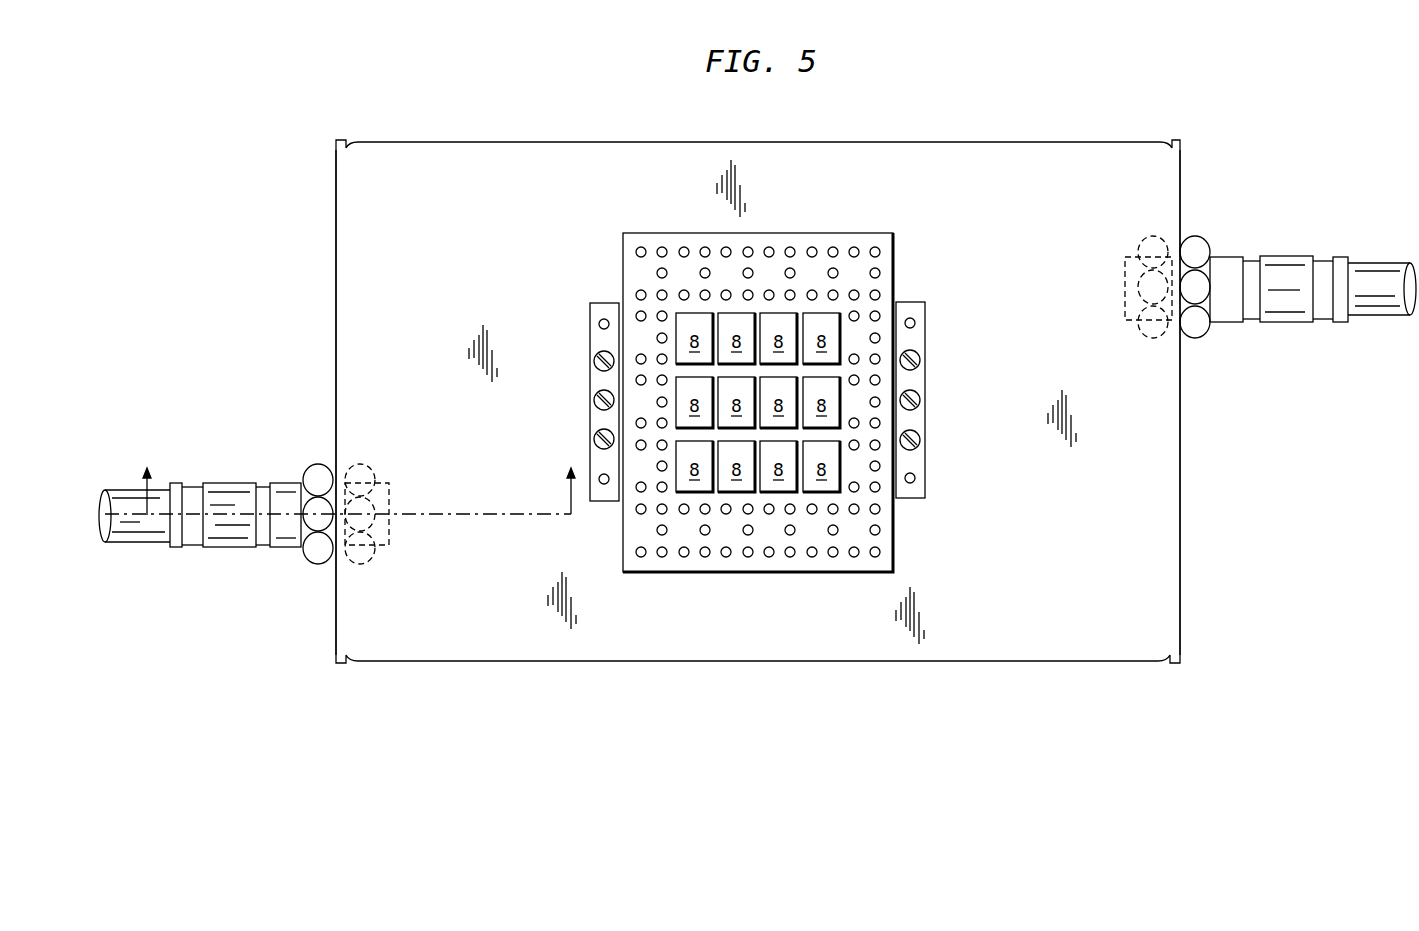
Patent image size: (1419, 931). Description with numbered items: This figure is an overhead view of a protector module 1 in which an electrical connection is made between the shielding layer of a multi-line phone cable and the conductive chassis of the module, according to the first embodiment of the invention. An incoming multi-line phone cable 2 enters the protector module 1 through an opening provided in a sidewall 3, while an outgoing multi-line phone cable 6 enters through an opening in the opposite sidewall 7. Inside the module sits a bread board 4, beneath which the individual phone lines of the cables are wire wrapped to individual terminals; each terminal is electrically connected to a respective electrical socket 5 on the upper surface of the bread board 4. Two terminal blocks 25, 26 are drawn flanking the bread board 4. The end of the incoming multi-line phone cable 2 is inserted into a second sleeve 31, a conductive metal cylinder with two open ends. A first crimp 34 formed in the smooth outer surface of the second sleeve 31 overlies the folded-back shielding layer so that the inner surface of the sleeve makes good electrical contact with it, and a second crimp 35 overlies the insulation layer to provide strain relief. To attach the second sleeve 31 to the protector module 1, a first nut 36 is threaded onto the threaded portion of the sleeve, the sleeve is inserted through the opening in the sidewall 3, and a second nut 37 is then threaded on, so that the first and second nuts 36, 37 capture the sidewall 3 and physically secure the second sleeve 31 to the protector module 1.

The protector module 1 is at (955, 676).
The incoming multi-line phone cable 2 is at (119, 488).
The sidewall 3 is at (334, 640).
The bread board 4 is at (820, 233).
The electrical socket 5 is at (880, 272).
The outgoing multi-line phone cable 6 is at (1377, 200).
The opposite sidewall 7 is at (1182, 466).
The terminal block 25 is at (598, 342).
The terminal block 26 is at (916, 458).
The second sleeve 31 is at (235, 511).
The first crimp 34 is at (258, 549).
The second crimp 35 is at (188, 549).
The first nut 36 is at (316, 464).
The second nut 37 is at (364, 465).